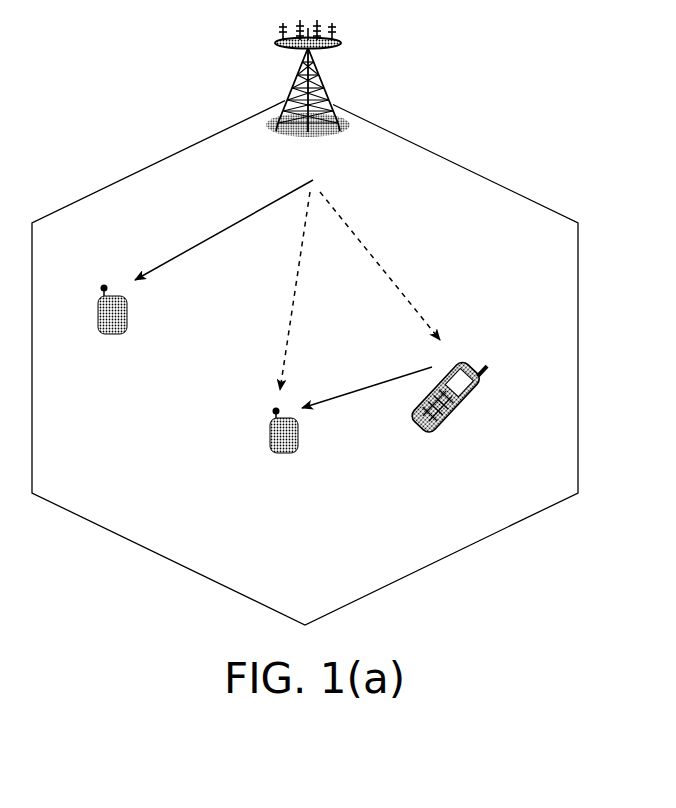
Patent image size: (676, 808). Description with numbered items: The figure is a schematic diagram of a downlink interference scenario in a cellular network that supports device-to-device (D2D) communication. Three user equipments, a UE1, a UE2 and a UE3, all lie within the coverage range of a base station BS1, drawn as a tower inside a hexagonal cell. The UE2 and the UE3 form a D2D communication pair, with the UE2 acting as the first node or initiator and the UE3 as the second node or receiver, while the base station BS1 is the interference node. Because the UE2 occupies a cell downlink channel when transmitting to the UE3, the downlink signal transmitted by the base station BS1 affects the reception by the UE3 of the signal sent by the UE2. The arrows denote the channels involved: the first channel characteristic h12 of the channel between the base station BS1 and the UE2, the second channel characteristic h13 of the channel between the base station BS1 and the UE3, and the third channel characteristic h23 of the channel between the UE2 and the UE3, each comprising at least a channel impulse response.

The base station BS1 is at (308, 93).
The user equipment UE1 is at (202, 271).
The user equipment UE2 is at (450, 407).
The user equipment UE3 is at (283, 446).
The first channel characteristic h12 is at (380, 266).
The second channel characteristic h13 is at (280, 291).
The third channel characteristic h23 is at (367, 384).